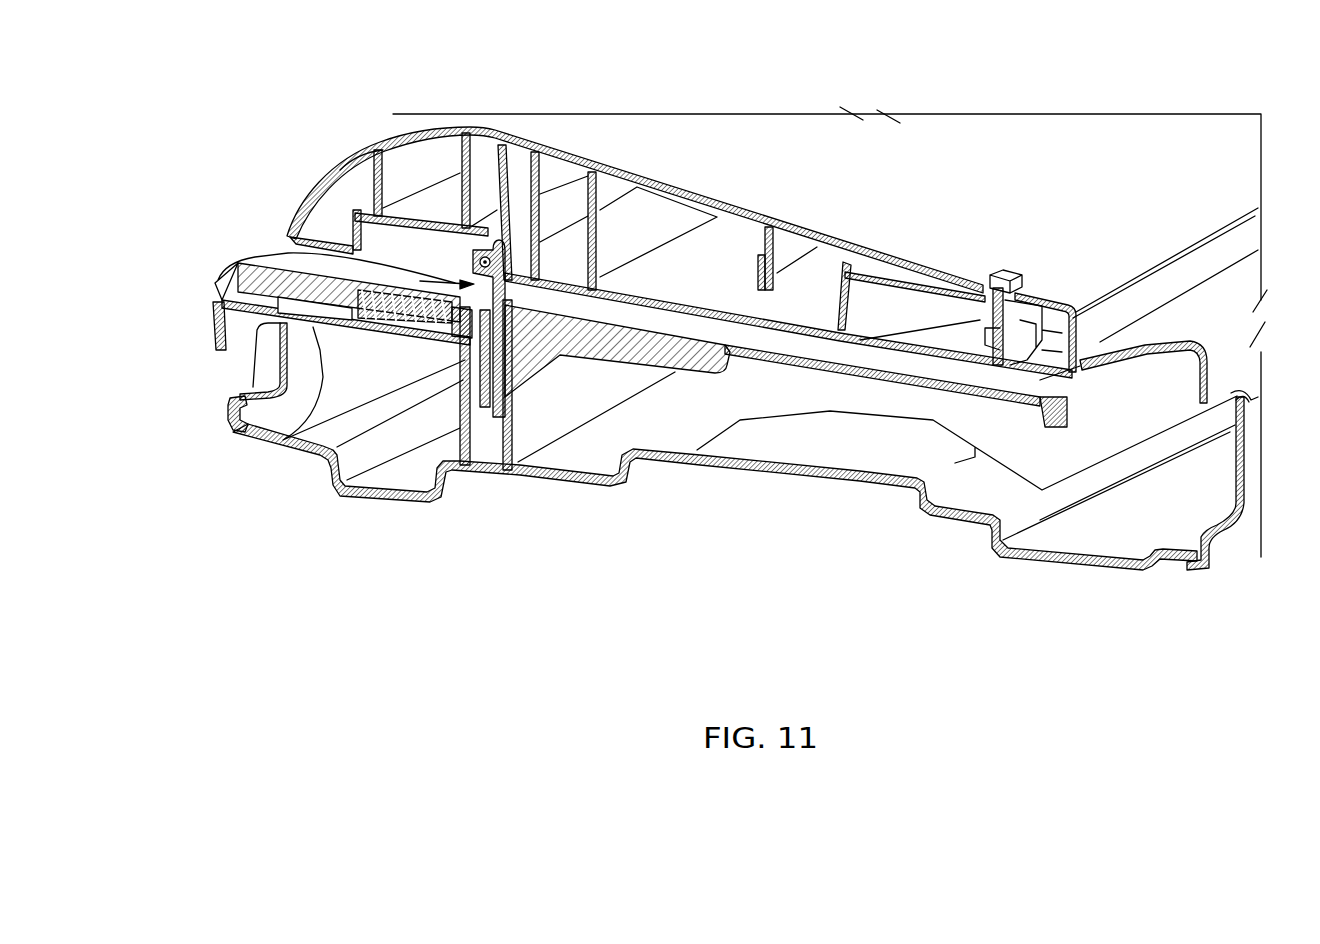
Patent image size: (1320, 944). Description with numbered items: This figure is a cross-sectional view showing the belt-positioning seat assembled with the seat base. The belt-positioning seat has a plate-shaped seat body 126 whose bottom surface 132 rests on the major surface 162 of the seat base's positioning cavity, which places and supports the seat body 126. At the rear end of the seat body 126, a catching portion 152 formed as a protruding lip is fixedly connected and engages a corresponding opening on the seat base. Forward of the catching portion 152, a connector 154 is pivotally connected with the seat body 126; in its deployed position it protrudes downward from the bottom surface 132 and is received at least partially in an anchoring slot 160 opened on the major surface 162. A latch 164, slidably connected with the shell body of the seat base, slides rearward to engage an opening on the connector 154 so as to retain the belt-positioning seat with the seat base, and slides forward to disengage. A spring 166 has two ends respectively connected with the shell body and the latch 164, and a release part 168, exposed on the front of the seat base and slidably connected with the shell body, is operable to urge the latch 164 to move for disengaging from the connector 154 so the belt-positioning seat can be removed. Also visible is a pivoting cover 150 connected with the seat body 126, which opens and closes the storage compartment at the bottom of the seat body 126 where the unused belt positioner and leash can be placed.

The seat body 126 is at (462, 131).
The bottom surface 132 is at (820, 287).
The pivoting cover 150 is at (923, 343).
The catching portion 152 is at (1082, 380).
The connector 154 is at (488, 330).
The anchoring slot 160 is at (305, 242).
The major surface 162 is at (692, 340).
The latch 164 is at (478, 330).
The spring 166 is at (336, 318).
The release part 168 is at (212, 335).